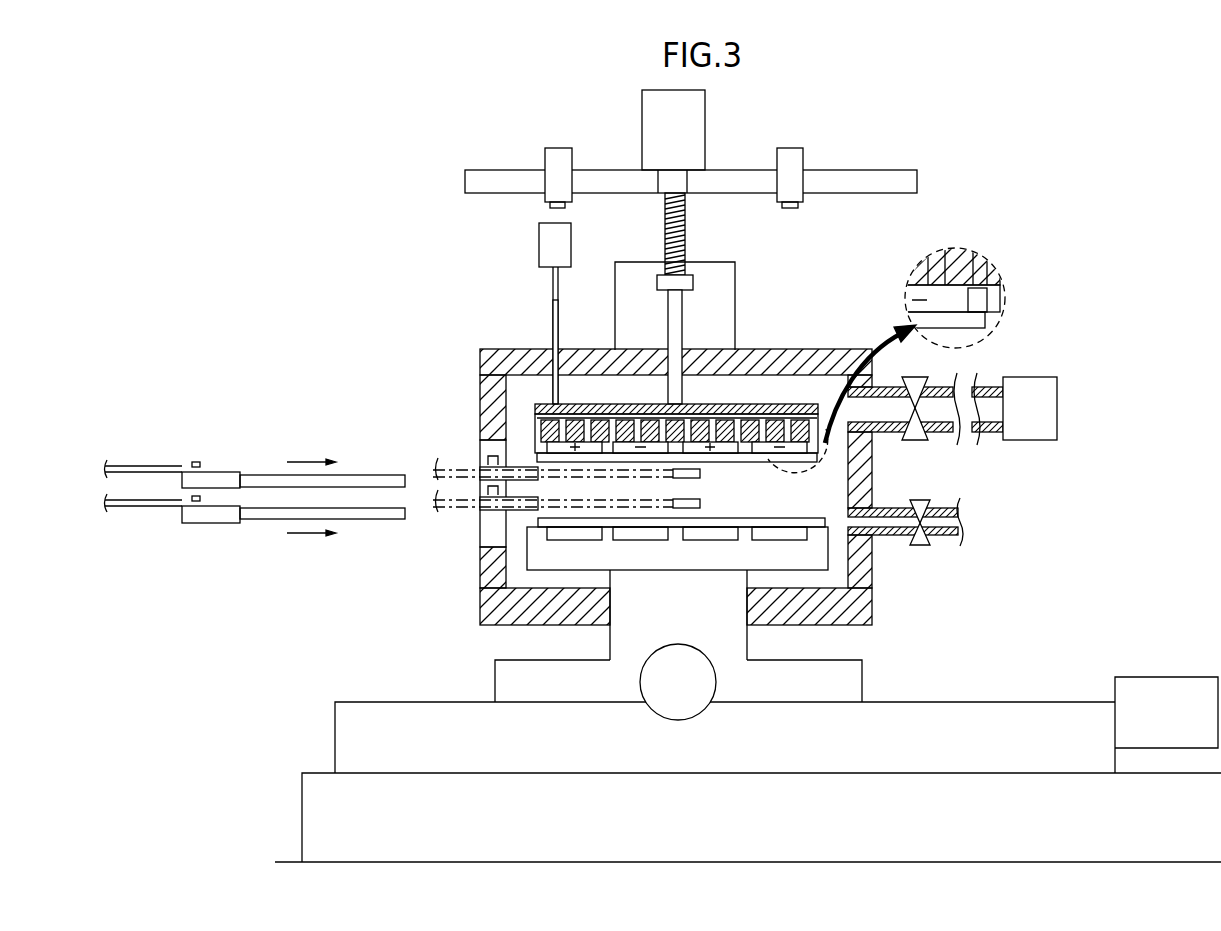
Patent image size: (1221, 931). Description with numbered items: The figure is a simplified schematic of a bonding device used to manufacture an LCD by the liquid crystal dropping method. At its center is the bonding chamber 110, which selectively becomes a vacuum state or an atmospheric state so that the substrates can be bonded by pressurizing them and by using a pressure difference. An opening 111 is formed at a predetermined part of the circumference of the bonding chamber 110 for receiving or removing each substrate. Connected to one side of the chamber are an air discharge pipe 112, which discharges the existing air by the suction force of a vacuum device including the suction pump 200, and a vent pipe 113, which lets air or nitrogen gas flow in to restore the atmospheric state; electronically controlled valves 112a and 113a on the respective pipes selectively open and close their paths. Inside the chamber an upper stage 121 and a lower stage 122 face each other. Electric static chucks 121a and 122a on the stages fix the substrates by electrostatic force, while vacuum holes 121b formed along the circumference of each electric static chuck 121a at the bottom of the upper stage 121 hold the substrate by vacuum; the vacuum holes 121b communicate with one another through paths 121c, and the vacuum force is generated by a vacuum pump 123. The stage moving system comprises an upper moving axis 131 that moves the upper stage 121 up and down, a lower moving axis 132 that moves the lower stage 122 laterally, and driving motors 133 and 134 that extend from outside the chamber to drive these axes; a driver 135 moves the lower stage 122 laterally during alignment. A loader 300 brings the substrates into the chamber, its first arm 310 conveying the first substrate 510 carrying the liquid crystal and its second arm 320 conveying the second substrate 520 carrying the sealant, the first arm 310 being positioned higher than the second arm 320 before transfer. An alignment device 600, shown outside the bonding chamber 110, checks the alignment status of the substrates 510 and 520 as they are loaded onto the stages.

The bonding chamber 110 is at (474, 346).
The opening 111 is at (505, 545).
The air discharge pipe 112 is at (988, 433).
The valve 112a is at (917, 442).
The vent pipe 113 is at (947, 523).
The valve 113a is at (920, 541).
The upper stage 121 is at (805, 396).
The electric static chuck 121a is at (967, 300).
The vacuum hole 121b is at (993, 265).
The path 121c is at (750, 388).
The lower stage 122 is at (768, 557).
The electric static chuck 122a is at (792, 528).
The vacuum pump 123 is at (540, 237).
The upper moving axis 131 is at (678, 310).
The lower moving axis 132 is at (623, 638).
The driving motor 133 is at (697, 122).
The driving motor 134 is at (682, 702).
The driver 135 is at (1182, 688).
The suction pump 200 is at (1057, 414).
The loader 300 is at (308, 474).
The first arm 310 is at (233, 472).
The second arm 320 is at (213, 523).
The first substrate 510 is at (547, 527).
The second substrate 520 is at (555, 458).
The alignment device 600 is at (560, 157).